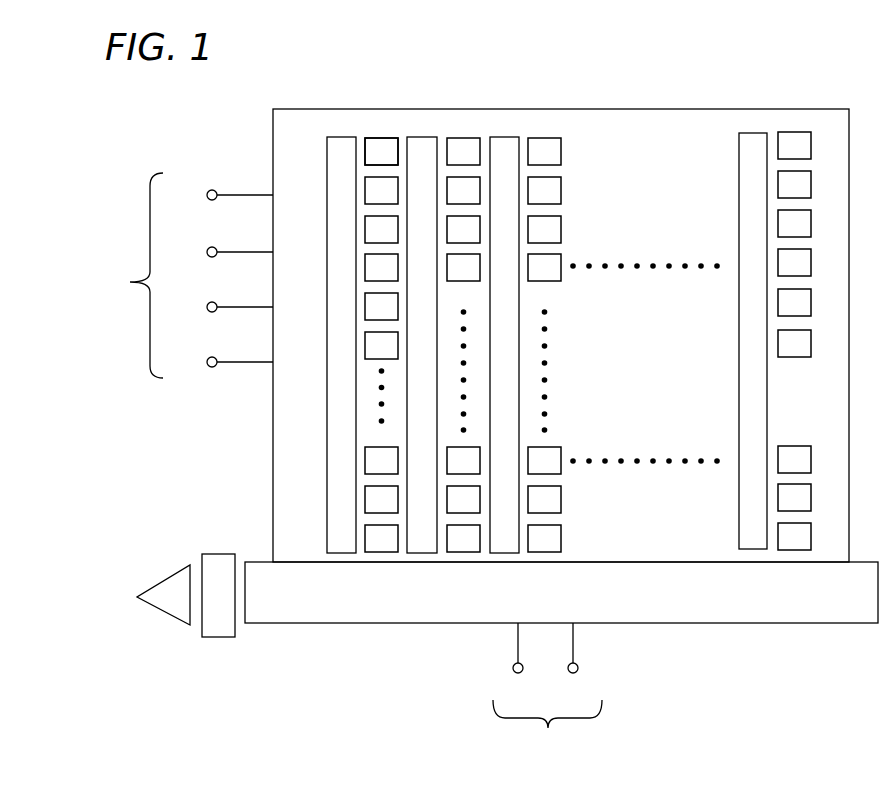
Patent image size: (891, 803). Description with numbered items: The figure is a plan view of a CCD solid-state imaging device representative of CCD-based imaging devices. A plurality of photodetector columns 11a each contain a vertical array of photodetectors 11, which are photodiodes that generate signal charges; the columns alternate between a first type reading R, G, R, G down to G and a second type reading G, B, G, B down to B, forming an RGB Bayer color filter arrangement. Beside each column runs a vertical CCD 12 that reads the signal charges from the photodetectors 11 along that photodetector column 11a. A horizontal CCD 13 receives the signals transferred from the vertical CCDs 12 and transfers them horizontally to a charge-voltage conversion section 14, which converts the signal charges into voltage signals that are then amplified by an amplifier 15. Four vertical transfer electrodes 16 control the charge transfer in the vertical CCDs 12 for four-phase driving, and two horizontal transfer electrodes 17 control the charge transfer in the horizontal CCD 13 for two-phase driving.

The photodetector 11 is at (545, 138).
The photodetector column 11a is at (381, 123).
The vertical CCD 12 is at (756, 147).
The horizontal CCD 13 is at (703, 608).
The charge-voltage conversion section 14 is at (218, 617).
The amplifier 15 is at (178, 600).
The vertical transfer electrodes 16 is at (184, 275).
The horizontal transfer electrodes 17 is at (547, 696).